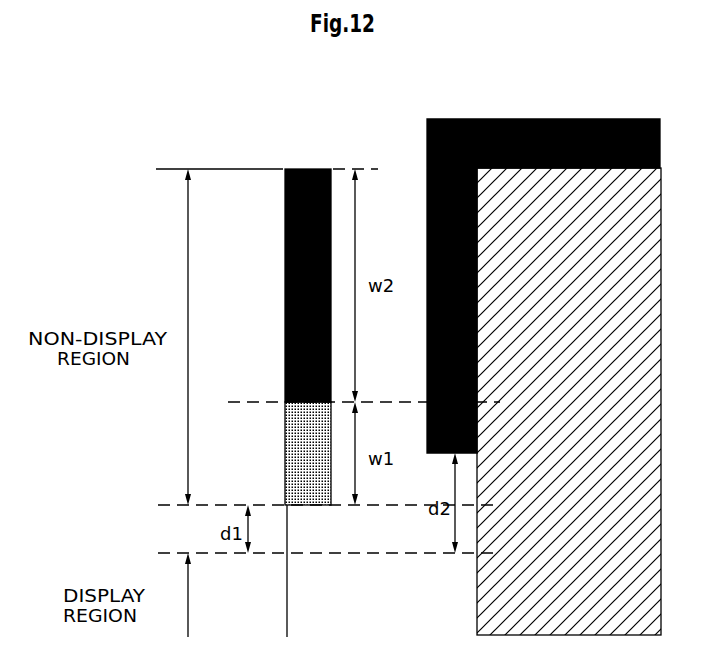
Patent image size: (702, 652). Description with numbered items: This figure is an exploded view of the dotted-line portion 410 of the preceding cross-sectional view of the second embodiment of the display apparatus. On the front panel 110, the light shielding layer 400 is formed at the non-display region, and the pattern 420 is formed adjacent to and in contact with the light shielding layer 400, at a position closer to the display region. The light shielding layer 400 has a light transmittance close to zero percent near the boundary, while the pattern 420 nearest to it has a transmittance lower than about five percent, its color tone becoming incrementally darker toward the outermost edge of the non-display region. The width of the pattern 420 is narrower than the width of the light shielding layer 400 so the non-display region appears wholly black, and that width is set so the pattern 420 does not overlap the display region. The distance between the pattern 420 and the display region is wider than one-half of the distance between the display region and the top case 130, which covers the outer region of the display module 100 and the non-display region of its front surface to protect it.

The display module 100 is at (587, 118).
The front panel 110 is at (240, 180).
The top case 130 is at (530, 118).
The light shielding layer 400 is at (280, 320).
The dotted-line portion 410 is at (284, 291).
The pattern 420 is at (285, 447).